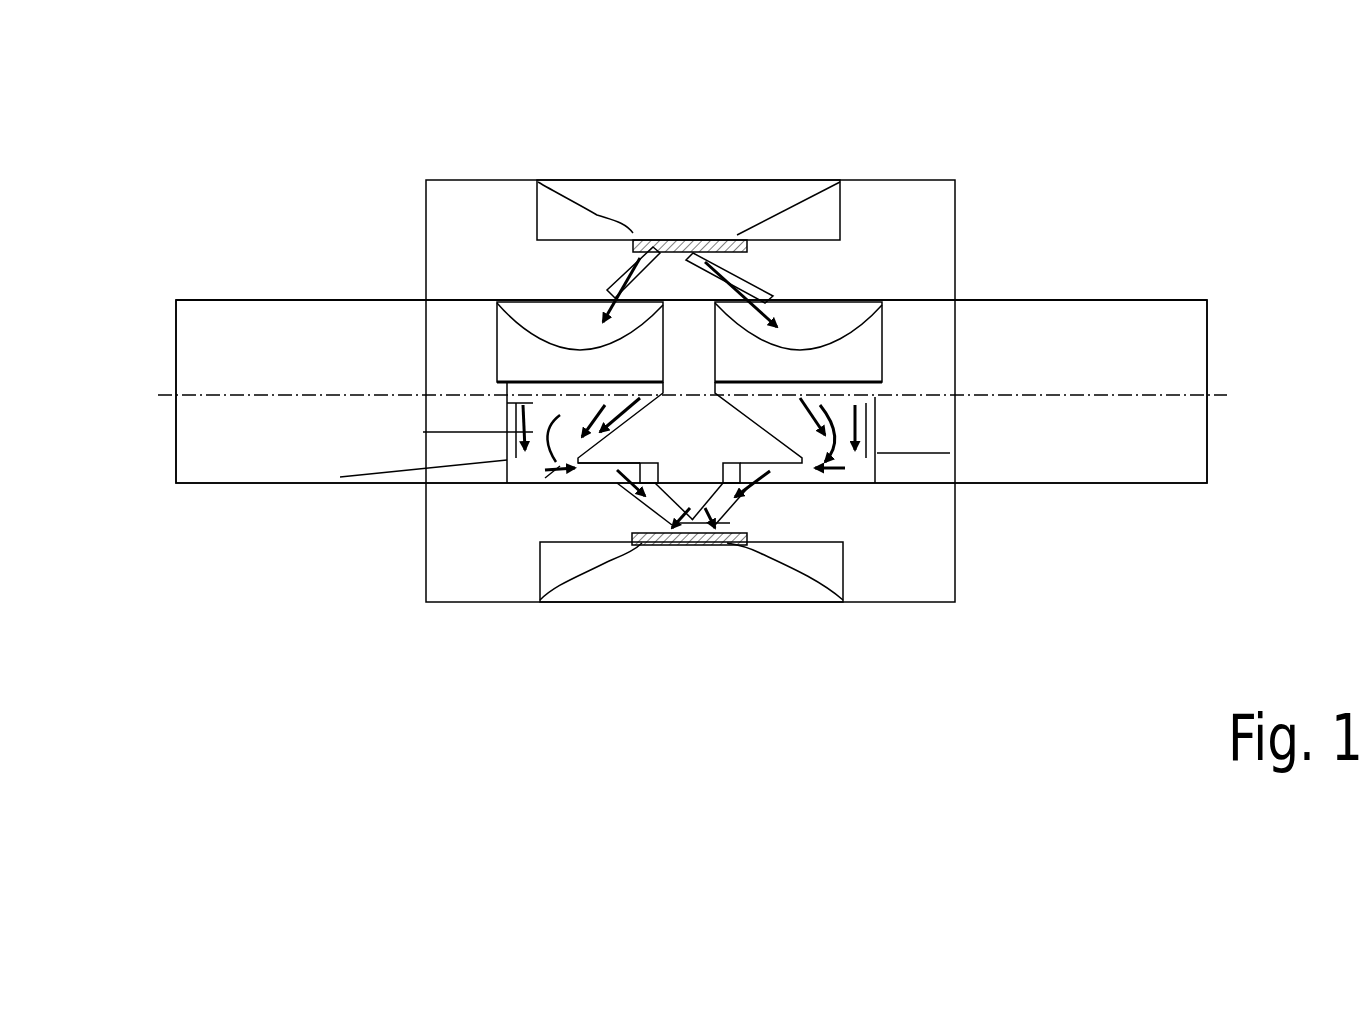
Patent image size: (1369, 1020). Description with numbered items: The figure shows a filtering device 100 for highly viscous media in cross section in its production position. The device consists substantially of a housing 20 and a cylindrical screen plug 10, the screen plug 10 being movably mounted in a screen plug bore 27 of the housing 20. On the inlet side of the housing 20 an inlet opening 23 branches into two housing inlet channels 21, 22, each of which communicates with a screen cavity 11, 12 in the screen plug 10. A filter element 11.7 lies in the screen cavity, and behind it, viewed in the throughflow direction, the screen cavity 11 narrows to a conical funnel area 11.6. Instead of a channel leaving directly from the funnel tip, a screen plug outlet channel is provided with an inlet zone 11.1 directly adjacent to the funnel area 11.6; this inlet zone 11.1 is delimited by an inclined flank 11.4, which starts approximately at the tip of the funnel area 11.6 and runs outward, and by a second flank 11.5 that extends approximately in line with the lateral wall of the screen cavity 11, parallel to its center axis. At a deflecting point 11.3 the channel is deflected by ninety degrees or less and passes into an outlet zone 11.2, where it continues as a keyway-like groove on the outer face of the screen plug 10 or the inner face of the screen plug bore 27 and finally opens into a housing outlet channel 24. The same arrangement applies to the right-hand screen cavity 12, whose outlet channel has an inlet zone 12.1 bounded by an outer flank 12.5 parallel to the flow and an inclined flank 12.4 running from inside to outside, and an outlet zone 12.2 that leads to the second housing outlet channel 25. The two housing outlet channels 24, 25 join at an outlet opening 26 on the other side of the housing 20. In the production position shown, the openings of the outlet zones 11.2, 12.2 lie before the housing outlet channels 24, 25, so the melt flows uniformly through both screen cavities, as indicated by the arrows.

The filtering device 100 is at (158, 157).
The screen plug 10 is at (388, 328).
The screen cavity 11 is at (585, 357).
The inlet zone 11.1 is at (533, 432).
The outlet zone 11.2 is at (608, 468).
The deflecting point 11.3 is at (550, 472).
The flank 11.4 is at (533, 403).
The second flank 11.5 is at (507, 460).
The funnel area 11.6 is at (563, 403).
The filter element 11.7 is at (500, 382).
The screen cavity 12 is at (847, 355).
The inlet zone 12.1 is at (855, 462).
The outlet zone 12.2 is at (780, 475).
The inclined flank 12.4 is at (860, 396).
The outer flank 12.5 is at (877, 453).
The housing 20 is at (458, 200).
The housing inlet channel 21 is at (643, 283).
The housing inlet channel 22 is at (740, 277).
The inlet opening 23 is at (693, 250).
The housing outlet channel 24 is at (652, 500).
The housing outlet channel 25 is at (727, 535).
The outlet opening 26 is at (692, 525).
The screen plug bore 27 is at (898, 300).